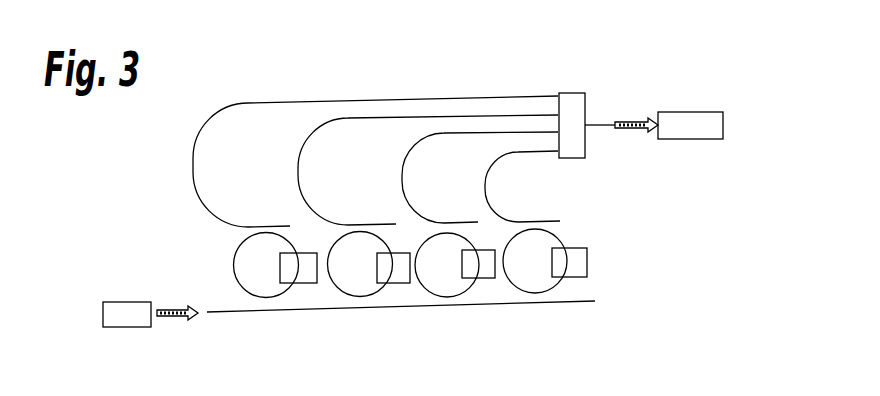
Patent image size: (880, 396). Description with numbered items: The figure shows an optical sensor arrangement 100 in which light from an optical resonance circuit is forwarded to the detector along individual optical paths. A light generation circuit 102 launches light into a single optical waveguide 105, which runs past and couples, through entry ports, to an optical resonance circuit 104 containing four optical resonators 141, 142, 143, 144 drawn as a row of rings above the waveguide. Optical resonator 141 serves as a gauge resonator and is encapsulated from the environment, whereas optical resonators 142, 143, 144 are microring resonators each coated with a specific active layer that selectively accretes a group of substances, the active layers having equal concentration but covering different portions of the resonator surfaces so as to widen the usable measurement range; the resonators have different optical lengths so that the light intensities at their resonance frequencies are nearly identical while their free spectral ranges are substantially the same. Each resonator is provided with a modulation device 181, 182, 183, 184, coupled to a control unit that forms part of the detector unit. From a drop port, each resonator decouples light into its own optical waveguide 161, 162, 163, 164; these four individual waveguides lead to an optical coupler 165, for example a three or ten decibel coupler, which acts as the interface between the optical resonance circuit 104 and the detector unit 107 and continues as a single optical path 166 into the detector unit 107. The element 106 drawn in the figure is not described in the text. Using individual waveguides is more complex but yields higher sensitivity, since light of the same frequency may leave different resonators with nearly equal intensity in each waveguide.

The optical sensor arrangement 100 is at (228, 100).
The light generation circuit 102 is at (120, 334).
The optical resonance circuit 104 is at (228, 270).
The single optical waveguide 105 is at (253, 316).
The extraction device 106 is at (325, 97).
The detector unit 107 is at (690, 112).
The optical resonator 141 is at (266, 265).
The optical resonator 142 is at (360, 264).
The optical resonator 143 is at (447, 265).
The optical resonator 144 is at (535, 261).
The optical waveguide 161 is at (196, 165).
The optical waveguide 162 is at (300, 160).
The optical waveguide 163 is at (404, 168).
The optical waveguide 164 is at (488, 178).
The optical coupler 165 is at (568, 86).
The single optical path 166 is at (600, 122).
The modulation device 181 is at (298, 268).
The modulation device 182 is at (393, 268).
The modulation device 183 is at (478, 264).
The modulation device 184 is at (569, 262).